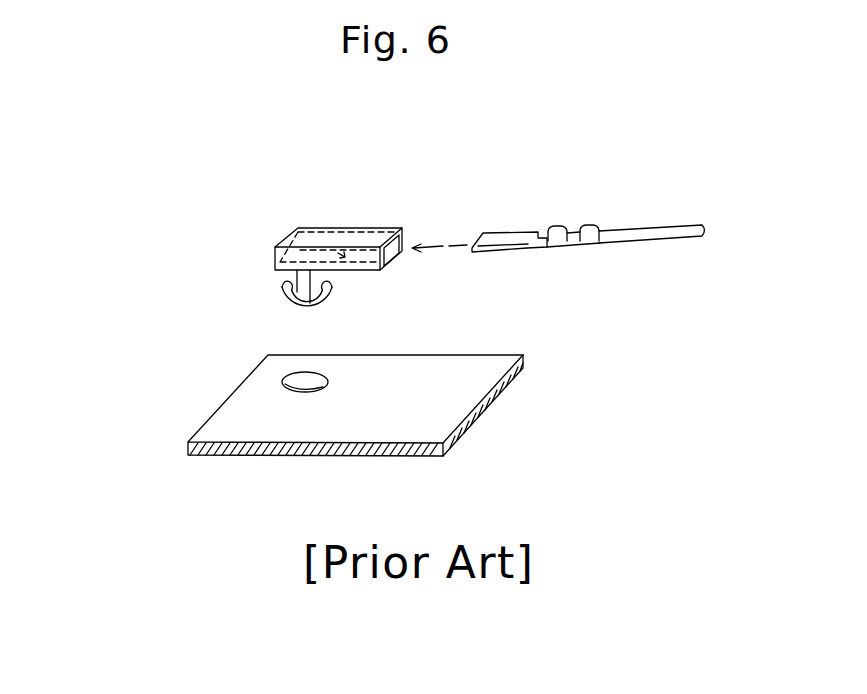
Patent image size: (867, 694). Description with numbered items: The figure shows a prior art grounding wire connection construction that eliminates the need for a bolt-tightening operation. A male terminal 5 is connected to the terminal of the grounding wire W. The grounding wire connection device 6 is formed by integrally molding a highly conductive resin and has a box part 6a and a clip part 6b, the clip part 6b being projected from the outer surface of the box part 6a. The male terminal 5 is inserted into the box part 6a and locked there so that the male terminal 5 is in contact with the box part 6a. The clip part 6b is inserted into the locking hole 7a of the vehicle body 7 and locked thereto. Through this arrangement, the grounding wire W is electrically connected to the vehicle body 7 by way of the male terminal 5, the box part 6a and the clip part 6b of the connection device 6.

The male terminal 5 is at (517, 225).
The grounding wire W is at (662, 239).
The grounding wire connection device 6 is at (310, 219).
The box part 6a is at (292, 243).
The clip part 6b is at (318, 312).
The vehicle body 7 is at (492, 407).
The locking hole 7a is at (284, 378).